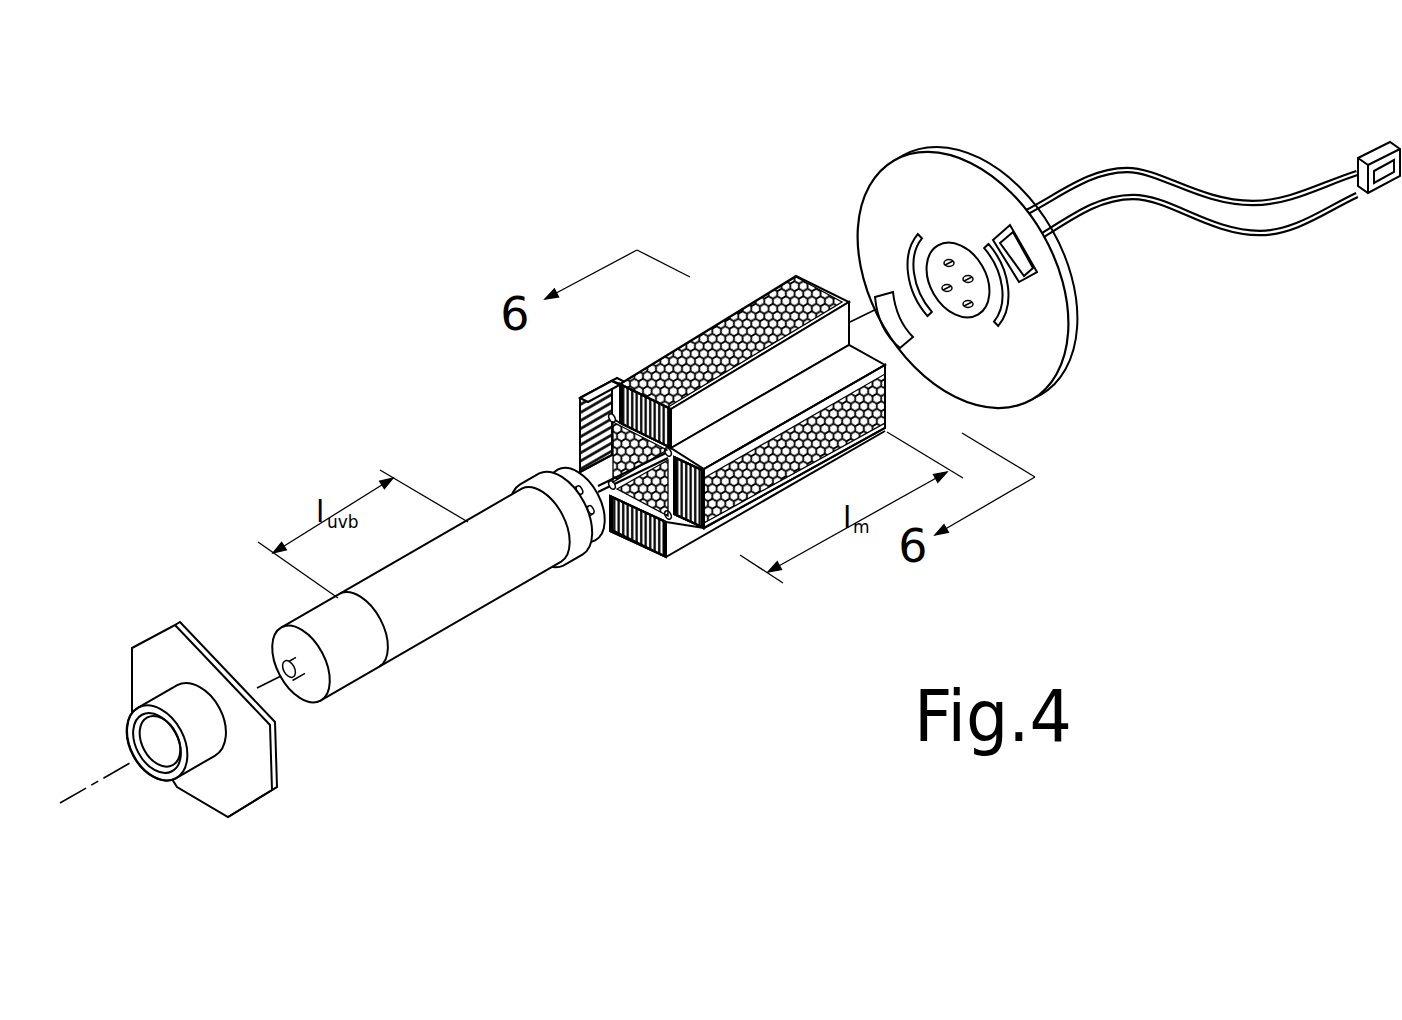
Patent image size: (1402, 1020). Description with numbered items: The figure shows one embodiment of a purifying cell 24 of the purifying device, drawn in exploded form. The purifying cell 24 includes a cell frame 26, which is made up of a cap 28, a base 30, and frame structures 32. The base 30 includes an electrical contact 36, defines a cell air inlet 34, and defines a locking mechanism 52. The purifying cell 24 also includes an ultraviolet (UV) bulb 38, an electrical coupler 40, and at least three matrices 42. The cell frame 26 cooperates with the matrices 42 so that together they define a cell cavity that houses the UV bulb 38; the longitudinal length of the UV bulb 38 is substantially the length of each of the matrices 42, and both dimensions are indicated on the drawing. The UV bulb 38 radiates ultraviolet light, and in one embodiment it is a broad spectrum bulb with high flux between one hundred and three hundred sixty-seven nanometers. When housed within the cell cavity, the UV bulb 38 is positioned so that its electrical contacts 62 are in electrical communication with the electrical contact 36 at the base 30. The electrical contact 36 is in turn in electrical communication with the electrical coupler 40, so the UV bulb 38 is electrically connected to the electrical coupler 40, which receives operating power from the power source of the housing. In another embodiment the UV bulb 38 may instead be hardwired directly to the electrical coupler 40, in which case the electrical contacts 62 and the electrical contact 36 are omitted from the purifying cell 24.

The purifying cell 24 is at (699, 383).
The cell frame 26 is at (900, 180).
The cap 28 is at (250, 793).
The base 30 is at (1023, 383).
The frame structures 32 is at (755, 376).
The cell air inlet 34 is at (912, 244).
The electrical contact 36 is at (963, 262).
The ultraviolet (UV) bulb 38 is at (455, 595).
The electrical coupler 40 is at (1380, 148).
The matrices 42 is at (590, 402).
The locking mechanism 52 is at (1040, 255).
The electrical contacts 62 is at (556, 468).